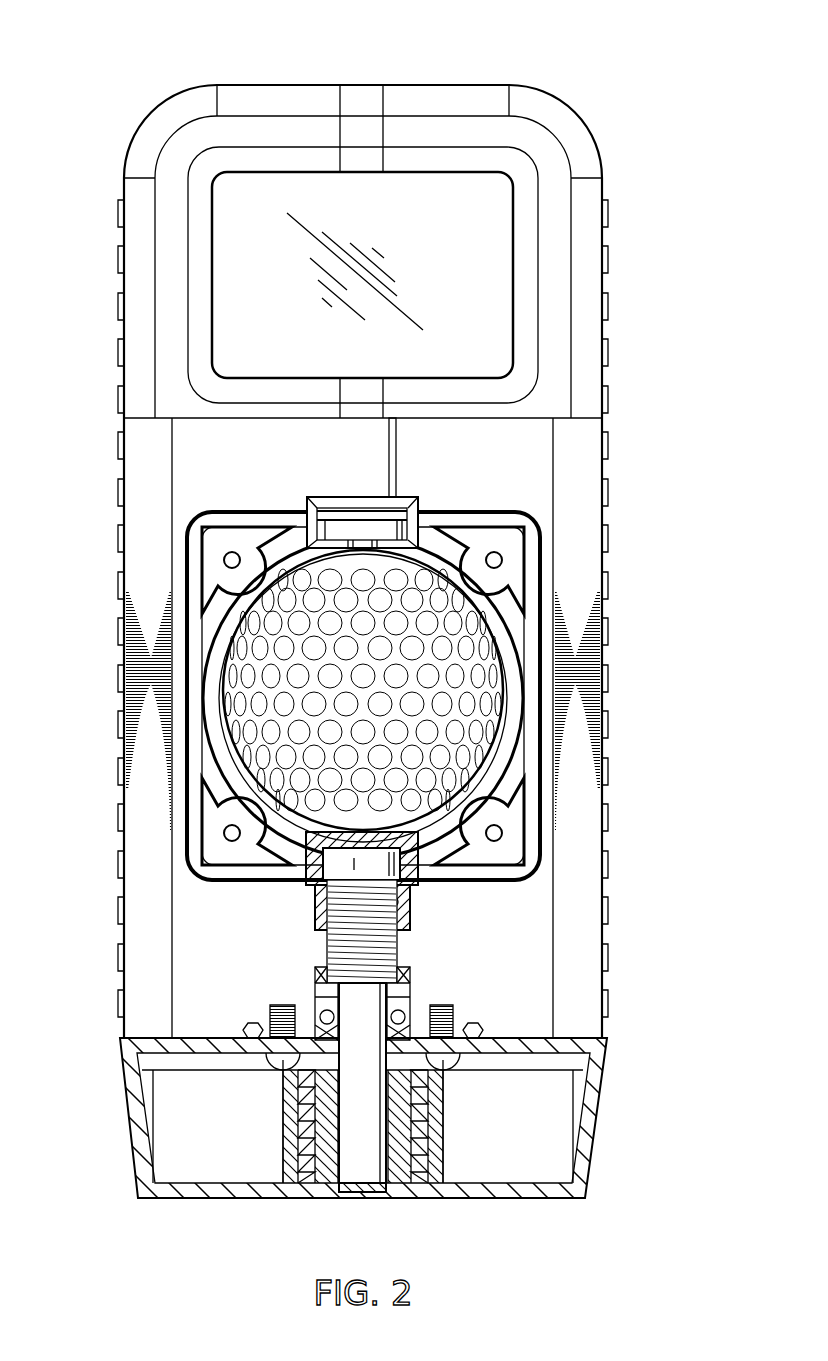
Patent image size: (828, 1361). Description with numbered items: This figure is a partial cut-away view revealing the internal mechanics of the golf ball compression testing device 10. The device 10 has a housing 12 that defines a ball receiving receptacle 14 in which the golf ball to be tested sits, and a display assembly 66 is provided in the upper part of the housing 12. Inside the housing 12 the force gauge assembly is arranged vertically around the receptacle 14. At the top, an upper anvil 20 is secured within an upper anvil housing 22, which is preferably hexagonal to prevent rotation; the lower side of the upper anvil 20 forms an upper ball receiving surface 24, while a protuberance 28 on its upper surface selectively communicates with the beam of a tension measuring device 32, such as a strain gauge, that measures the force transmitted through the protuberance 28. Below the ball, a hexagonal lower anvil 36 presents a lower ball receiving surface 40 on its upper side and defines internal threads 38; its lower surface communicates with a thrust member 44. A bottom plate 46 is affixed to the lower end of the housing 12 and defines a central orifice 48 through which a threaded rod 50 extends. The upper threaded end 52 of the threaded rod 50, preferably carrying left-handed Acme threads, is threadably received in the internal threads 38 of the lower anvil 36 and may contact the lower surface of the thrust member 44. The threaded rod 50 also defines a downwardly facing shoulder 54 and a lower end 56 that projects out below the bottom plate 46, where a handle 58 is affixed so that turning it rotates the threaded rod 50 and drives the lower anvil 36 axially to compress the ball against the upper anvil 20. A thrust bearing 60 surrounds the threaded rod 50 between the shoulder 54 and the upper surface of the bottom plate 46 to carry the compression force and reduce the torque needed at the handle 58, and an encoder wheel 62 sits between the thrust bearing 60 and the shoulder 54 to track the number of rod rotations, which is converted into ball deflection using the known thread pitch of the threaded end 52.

The golf ball compression testing device 10 is at (244, 58).
The housing 12 is at (470, 85).
The ball receiving receptacle 14 is at (203, 652).
The upper anvil 20 is at (330, 526).
The upper anvil housing 22 is at (318, 522).
The upper ball receiving surface 24 is at (359, 550).
The protuberance 28 is at (357, 522).
The tension measuring device 32 is at (386, 505).
The lower anvil 36 is at (314, 905).
The internal threads 38 is at (399, 905).
The lower ball receiving surface 40 is at (362, 831).
The thrust member 44 is at (310, 868).
The bottom plate 46 is at (605, 1050).
The central orifice 48 is at (384, 1045).
The threaded rod 50 is at (393, 1148).
The upper threaded end 52 is at (327, 940).
The downwardly facing shoulder 54 is at (322, 983).
The lower end 56 is at (360, 1195).
The handle 58 is at (256, 1198).
The thrust bearing 60 is at (426, 1005).
The encoder wheel 62 is at (409, 990).
The display assembly 66 is at (228, 260).